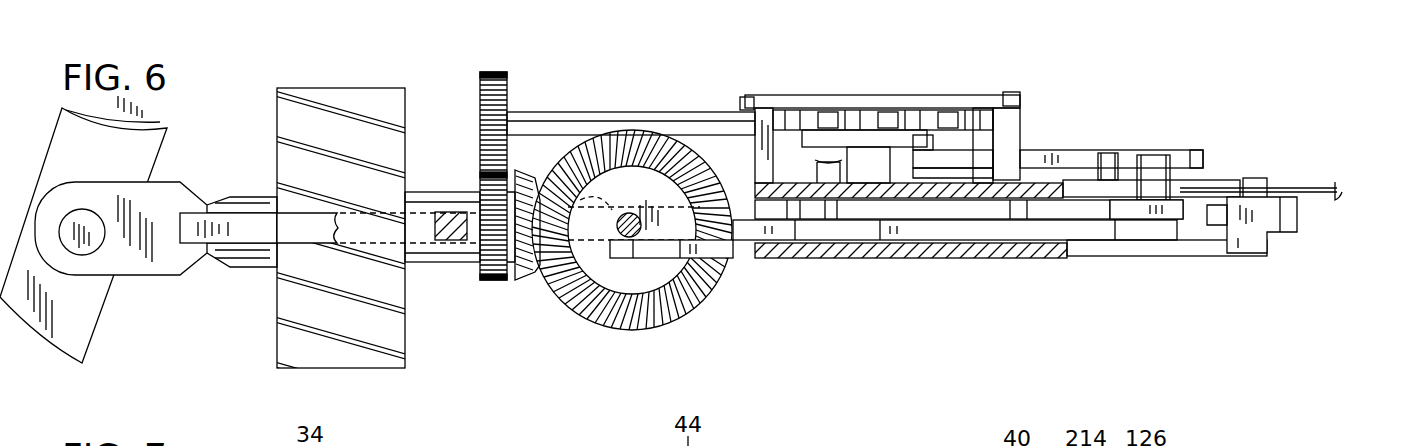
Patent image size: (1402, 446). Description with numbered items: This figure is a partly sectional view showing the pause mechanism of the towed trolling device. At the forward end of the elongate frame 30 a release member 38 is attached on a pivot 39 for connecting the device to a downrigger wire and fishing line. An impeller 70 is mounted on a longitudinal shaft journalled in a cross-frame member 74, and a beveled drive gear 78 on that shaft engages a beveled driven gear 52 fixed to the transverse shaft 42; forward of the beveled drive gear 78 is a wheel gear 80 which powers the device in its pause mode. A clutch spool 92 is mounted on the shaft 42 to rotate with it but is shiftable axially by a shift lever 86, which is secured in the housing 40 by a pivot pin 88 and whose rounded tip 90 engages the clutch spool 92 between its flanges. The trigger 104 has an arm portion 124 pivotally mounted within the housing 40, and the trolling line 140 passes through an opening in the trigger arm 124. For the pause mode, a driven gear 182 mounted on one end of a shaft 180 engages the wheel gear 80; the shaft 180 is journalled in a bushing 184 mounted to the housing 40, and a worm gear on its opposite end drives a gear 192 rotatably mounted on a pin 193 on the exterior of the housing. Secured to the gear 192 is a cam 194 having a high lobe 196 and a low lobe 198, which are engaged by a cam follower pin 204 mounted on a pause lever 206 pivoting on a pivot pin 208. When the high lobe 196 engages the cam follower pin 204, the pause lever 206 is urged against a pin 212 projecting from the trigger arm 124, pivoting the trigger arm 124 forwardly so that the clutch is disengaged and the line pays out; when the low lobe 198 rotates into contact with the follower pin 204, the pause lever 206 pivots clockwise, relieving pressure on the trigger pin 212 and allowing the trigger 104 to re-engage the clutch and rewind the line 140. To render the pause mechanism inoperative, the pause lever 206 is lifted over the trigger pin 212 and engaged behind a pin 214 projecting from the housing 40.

The elongate frame 30 is at (258, 213).
The release member 38 is at (94, 279).
The pivot 39 is at (80, 217).
The housing 40 is at (900, 260).
The shaft 42 is at (630, 213).
The beveled driven gear 52 is at (704, 302).
The impeller 70 is at (356, 106).
The cross-frame member 74 is at (437, 240).
The beveled drive gear 78 is at (522, 280).
The wheel gear 80 is at (490, 280).
The shift lever 86 is at (988, 232).
The pivot pin 88 is at (840, 242).
The rounded tip 90 is at (628, 248).
The clutch spool 92 is at (595, 178).
The trigger 104 is at (1143, 220).
The trigger arm 124 is at (1185, 208).
The trolling line 140 is at (1312, 195).
The shaft 180 is at (705, 112).
The driven gear 182 is at (480, 100).
The bushing 184 is at (742, 116).
The gear 192 is at (945, 140).
The pin 193 is at (911, 103).
The cam 194 is at (812, 132).
The high lobe 196 is at (972, 148).
The low lobe 198 is at (866, 140).
The cam follower pin 204 is at (937, 148).
The pause lever 206 is at (1085, 150).
The pivot pin 208 is at (985, 160).
The pin 212 is at (1148, 158).
The pin 214 is at (1108, 153).